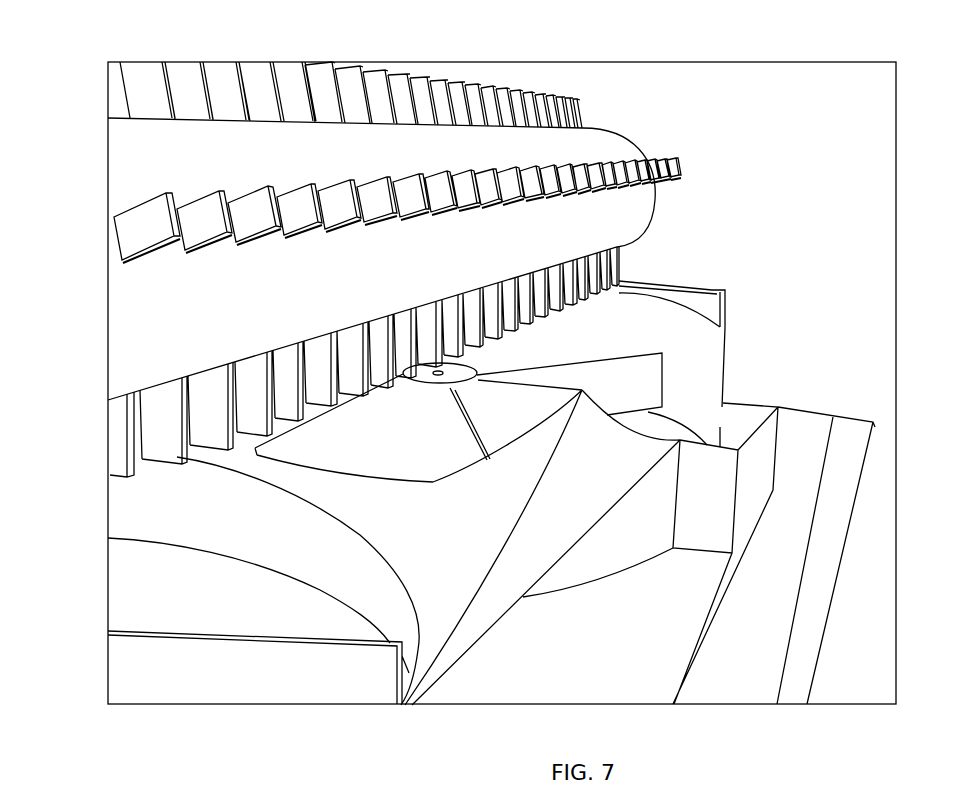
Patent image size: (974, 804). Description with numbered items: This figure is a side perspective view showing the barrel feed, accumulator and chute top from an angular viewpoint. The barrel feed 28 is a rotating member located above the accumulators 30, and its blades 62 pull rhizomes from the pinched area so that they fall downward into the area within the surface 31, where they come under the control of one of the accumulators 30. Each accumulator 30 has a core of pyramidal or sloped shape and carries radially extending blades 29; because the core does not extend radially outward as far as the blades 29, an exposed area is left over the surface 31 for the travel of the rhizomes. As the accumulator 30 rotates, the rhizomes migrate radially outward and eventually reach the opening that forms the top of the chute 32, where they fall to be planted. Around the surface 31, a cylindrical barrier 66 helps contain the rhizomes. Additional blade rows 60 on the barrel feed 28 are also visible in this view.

The barrel feed 28 is at (127, 174).
The upper blades 60 is at (353, 145).
The blades 62 is at (403, 100).
The accumulator 30 is at (433, 440).
The surface 31 is at (333, 620).
The chute 32 is at (725, 477).
The cylindrical barrier 66 is at (270, 547).
The blades 29 is at (297, 677).